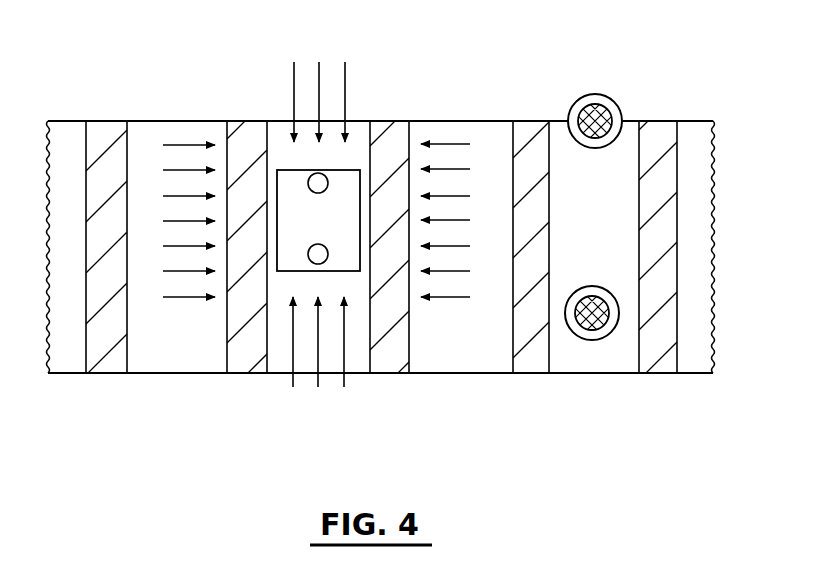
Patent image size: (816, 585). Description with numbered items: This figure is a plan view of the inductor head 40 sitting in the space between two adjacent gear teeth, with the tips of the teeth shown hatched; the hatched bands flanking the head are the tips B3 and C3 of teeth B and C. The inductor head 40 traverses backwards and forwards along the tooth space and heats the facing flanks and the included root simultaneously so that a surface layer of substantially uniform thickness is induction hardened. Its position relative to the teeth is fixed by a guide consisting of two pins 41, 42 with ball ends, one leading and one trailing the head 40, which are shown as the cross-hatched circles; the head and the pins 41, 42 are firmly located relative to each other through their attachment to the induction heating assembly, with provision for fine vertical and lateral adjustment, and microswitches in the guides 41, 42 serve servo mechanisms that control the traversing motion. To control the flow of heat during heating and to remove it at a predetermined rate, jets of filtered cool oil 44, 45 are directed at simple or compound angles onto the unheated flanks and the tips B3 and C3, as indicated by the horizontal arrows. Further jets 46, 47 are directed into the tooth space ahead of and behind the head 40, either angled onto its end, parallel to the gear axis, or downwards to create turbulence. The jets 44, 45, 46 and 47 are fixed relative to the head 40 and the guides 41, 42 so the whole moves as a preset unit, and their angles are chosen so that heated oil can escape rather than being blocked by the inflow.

The tip of tooth B B3 is at (250, 143).
The tip of tooth C C3 is at (393, 133).
The inductor head 40 is at (337, 195).
The guide pin 41 is at (588, 108).
The guide pin 42 is at (592, 340).
The jets of filtered cool oil 44 is at (175, 221).
The jets of filtered cool oil 45 is at (458, 220).
The jets of filtered cool oil 46 is at (319, 88).
The jets of filtered cool oil 47 is at (318, 358).